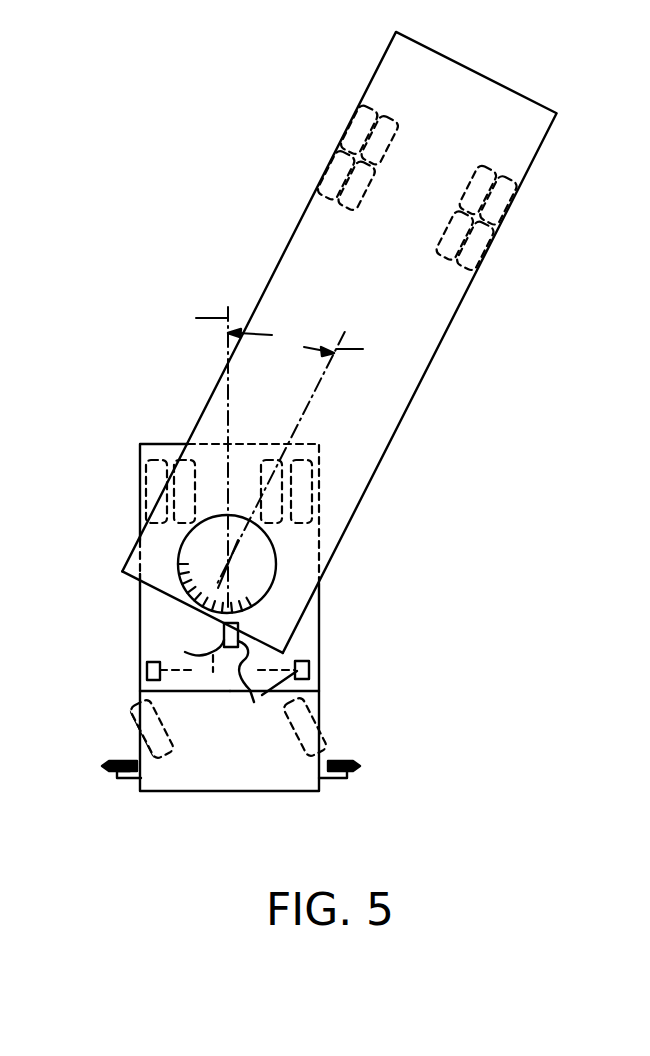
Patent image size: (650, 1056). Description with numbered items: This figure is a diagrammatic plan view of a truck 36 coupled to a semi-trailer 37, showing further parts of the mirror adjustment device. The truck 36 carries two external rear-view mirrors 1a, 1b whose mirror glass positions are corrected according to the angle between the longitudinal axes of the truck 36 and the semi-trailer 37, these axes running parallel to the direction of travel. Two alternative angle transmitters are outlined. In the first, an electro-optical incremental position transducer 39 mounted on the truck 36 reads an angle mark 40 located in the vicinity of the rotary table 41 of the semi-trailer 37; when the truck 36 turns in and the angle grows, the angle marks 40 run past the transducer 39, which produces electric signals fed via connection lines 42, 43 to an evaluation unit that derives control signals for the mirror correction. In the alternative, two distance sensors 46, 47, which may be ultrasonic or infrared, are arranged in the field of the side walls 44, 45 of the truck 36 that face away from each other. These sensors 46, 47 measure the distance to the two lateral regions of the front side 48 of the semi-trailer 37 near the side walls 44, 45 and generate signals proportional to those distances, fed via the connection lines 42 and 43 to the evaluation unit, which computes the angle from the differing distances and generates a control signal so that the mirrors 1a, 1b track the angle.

The semi-trailer 37 is at (452, 120).
The truck 36 is at (228, 791).
The front side of the semi-trailer 48 is at (168, 595).
The rotary table 41 is at (262, 557).
The angle mark 40 is at (232, 596).
The incremental position transducer 39 is at (239, 634).
The connection line 42 is at (166, 670).
The distance sensor 47 is at (147, 668).
The distance sensor 46 is at (309, 668).
The side wall of the truck 44 is at (141, 692).
The side wall of the truck 45 is at (319, 691).
The connection line 43 is at (267, 687).
The external rear-view mirror 1a is at (360, 767).
The external rear-view mirror 1b is at (102, 767).